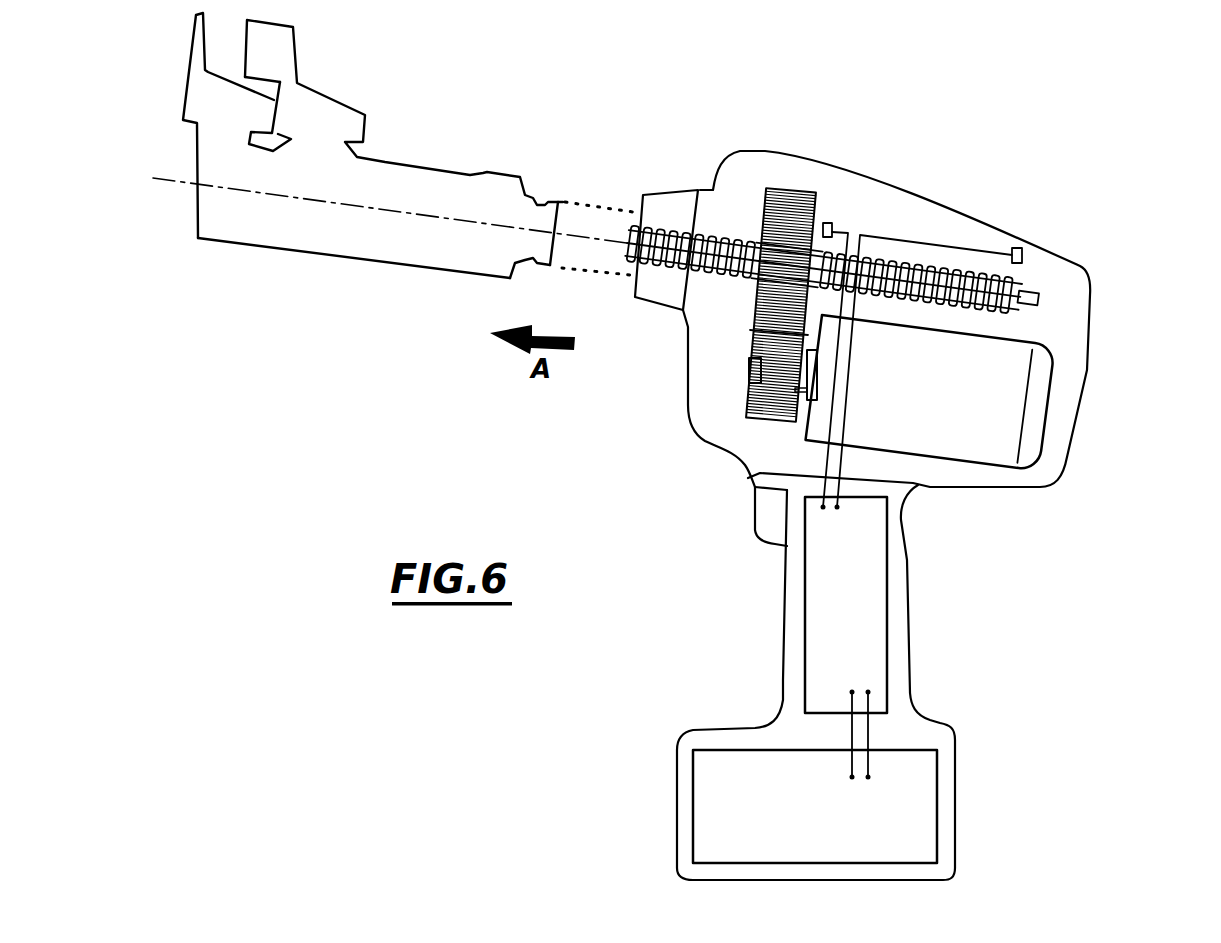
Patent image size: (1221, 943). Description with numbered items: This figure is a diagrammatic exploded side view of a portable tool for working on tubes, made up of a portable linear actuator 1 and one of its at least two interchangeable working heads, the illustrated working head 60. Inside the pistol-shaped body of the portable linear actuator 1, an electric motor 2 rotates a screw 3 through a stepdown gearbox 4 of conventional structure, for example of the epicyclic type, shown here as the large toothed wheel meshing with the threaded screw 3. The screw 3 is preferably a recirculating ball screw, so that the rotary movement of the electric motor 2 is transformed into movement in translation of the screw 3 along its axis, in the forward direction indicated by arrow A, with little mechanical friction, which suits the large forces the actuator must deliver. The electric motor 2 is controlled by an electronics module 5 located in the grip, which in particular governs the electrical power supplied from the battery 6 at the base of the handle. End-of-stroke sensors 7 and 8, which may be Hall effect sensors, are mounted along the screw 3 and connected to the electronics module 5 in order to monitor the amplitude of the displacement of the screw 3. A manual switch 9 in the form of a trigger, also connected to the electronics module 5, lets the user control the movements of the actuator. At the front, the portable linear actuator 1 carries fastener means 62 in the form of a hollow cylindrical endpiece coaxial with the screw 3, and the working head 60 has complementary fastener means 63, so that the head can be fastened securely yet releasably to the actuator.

The portable linear actuator 1 is at (1093, 323).
The electric motor 2 is at (1007, 420).
The screw 3 is at (1040, 288).
The stepdown gearbox 4 is at (740, 343).
The electronics module 5 is at (867, 605).
The battery 6 is at (907, 813).
The end-of-stroke sensor 7 is at (827, 223).
The end-of-stroke sensor 8 is at (1017, 248).
The manual switch 9 is at (760, 507).
The working head 60 is at (423, 160).
The fastener means 62 is at (672, 203).
The fastener means 63 is at (545, 180).